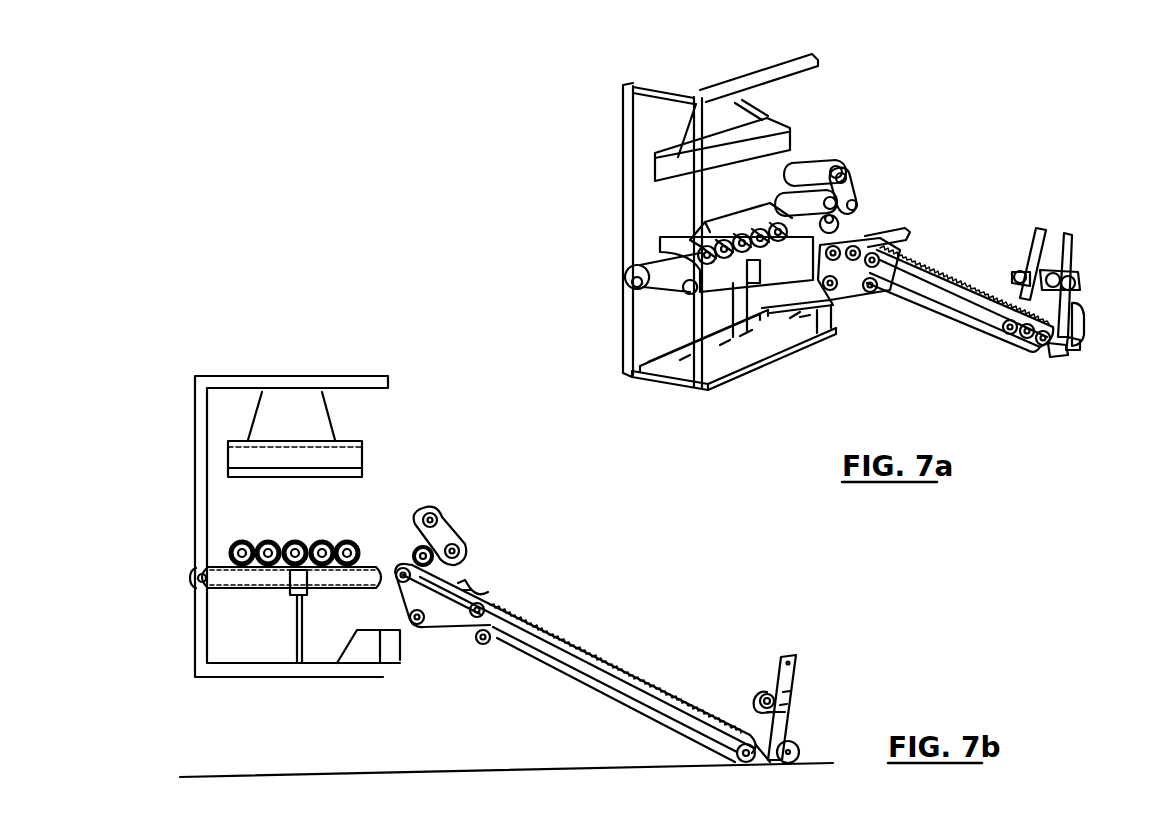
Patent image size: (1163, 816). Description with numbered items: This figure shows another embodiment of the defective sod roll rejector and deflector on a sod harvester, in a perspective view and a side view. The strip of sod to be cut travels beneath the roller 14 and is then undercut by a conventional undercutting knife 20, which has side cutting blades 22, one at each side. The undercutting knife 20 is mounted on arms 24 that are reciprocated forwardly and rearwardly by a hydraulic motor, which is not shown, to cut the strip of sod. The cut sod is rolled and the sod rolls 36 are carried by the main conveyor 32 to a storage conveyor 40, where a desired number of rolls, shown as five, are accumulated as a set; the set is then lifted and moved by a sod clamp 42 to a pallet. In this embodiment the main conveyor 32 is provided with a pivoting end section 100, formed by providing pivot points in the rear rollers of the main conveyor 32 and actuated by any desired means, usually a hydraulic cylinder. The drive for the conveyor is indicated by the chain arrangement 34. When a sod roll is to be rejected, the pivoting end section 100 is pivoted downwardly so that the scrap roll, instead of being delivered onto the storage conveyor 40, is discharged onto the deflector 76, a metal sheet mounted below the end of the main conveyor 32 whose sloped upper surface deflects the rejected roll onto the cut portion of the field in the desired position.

In FIG. 7A, the roller 14 is at (1078, 310).
In FIG. 7A, the undercutting knife 20 is at (1060, 352).
In FIG. 7A, the side cutting blades 22 is at (1077, 350).
In FIG. 7A, the arms 24 is at (1028, 243).
In FIG. 7A, the main conveyor 32 is at (950, 272).
In FIG. 7B, the main conveyor 32 is at (613, 678).
In FIG. 7A, the drive chain link 34 is at (847, 183).
In FIG. 7B, the drive chain link 34 is at (460, 527).
In FIG. 7A, the sod rolls 36 is at (792, 203).
In FIG. 7A, the storage conveyor 40 is at (643, 265).
In FIG. 7B, the storage conveyor 40 is at (215, 560).
In FIG. 7A, the sod clamp 42 is at (797, 137).
In FIG. 7A, the deflector 76 is at (830, 327).
In FIG. 7B, the deflector 76 is at (363, 648).
In FIG. 7B, the pivoting end section 100 is at (448, 646).